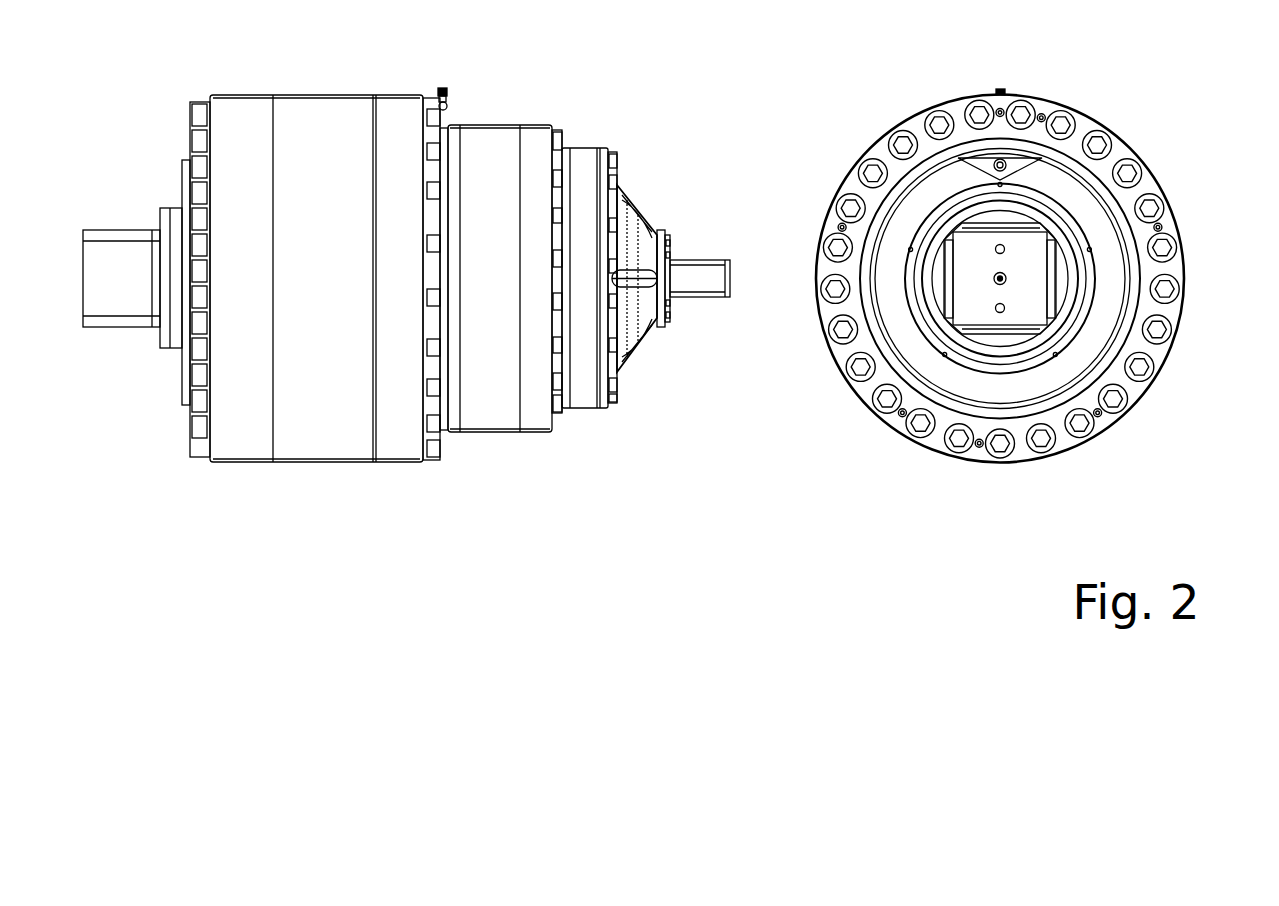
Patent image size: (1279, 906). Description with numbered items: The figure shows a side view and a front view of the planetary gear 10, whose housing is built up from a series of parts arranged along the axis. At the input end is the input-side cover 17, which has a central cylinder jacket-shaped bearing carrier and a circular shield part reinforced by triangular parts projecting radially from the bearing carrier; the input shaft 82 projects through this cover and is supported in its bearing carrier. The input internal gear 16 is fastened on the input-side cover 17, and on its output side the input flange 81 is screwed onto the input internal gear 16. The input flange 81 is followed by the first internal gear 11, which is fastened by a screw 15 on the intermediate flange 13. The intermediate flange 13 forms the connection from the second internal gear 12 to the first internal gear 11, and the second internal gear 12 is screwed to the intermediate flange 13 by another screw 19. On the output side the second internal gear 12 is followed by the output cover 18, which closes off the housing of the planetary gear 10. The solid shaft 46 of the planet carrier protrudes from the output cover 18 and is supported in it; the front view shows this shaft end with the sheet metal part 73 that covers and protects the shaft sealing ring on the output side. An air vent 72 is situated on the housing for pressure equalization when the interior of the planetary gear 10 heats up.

The planetary gear 10 is at (637, 430).
The first internal gear 11 is at (493, 412).
The second internal gear 12 is at (330, 133).
The intermediate flange 13 is at (402, 432).
The screw 15 is at (613, 407).
The input internal gear 16 is at (585, 170).
The input-side cover 17 is at (644, 345).
The output cover 18 is at (245, 423).
The screw 19 is at (433, 456).
The solid shaft 46 is at (118, 300).
The air vent 72 is at (447, 90).
The sheet metal part 73 is at (1078, 225).
The input flange 81 is at (538, 415).
The input shaft 82 is at (708, 292).